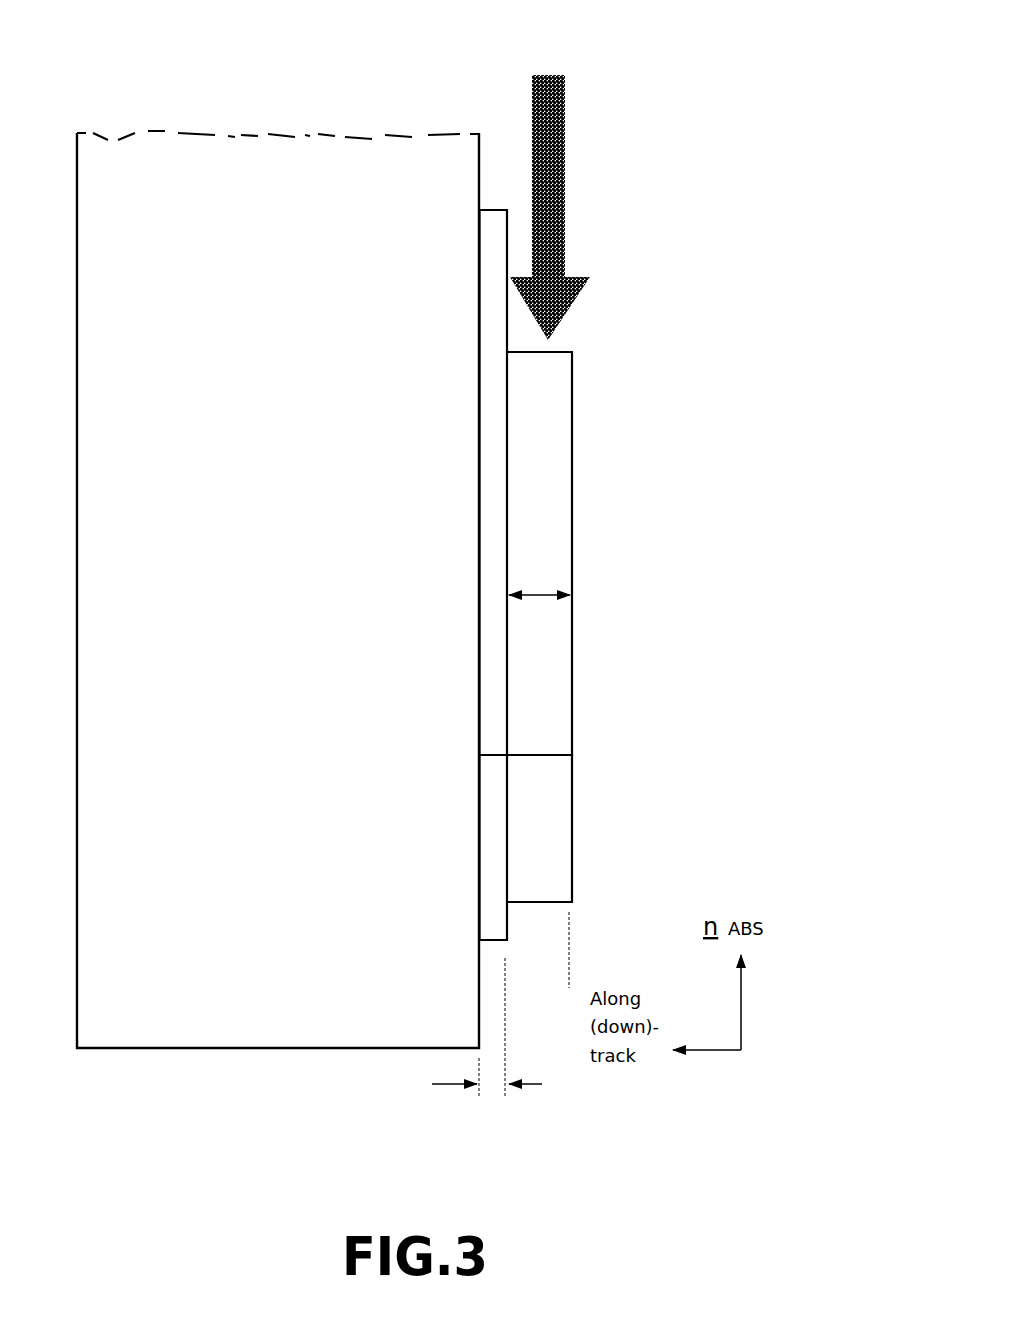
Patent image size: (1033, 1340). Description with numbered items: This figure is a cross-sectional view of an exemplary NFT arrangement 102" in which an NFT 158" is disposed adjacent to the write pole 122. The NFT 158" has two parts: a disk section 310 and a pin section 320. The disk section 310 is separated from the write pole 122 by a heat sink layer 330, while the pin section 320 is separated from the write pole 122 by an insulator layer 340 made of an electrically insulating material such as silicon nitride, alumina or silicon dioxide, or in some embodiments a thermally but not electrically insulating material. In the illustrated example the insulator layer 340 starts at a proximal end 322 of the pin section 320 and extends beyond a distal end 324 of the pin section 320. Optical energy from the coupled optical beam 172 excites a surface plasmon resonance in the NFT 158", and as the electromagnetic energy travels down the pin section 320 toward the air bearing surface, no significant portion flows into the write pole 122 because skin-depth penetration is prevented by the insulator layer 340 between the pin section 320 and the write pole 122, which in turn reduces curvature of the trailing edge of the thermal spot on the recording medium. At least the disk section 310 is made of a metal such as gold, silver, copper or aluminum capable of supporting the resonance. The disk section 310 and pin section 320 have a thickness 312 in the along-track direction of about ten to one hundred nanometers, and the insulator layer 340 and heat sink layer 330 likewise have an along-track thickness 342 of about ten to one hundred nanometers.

The NFT arrangement 102 is at (600, 117).
The coupled optical beam 172 is at (550, 190).
The NFT 158 is at (673, 402).
The heat sink layer 330 is at (490, 298).
The write pole 122 is at (278, 589).
The insulator layer 340 is at (492, 818).
The disk section 310 is at (556, 548).
The thickness 312 is at (540, 598).
The pin section 320 is at (540, 858).
The proximal end 322 is at (580, 755).
The distal end 324 is at (580, 902).
The thickness 342 is at (487, 1093).